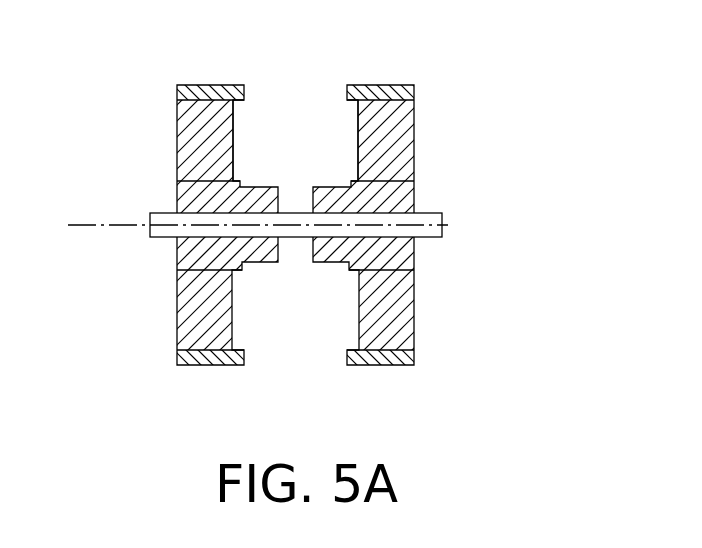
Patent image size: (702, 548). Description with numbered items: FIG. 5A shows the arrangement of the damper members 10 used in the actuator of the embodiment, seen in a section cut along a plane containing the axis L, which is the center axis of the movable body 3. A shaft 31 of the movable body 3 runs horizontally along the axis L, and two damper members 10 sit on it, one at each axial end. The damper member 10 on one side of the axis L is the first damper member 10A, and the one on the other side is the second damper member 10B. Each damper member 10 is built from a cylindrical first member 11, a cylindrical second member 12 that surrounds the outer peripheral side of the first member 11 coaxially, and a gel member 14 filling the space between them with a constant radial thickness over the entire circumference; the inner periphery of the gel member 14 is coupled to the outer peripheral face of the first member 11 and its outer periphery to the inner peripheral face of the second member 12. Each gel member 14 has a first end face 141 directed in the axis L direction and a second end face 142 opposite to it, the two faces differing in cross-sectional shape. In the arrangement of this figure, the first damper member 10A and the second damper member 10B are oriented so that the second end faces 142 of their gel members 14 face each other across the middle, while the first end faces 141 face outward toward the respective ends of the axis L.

The damper member 10 is at (351, 185).
The first damper member 10A is at (213, 70).
The second damper member 10B is at (388, 70).
The first end face 141 is at (177, 128).
The second end face 142 is at (358, 150).
The first member 11 is at (177, 252).
The gel member 14 is at (177, 305).
The second member 12 is at (177, 362).
The shaft 31 is at (352, 232).
The movable body 3 is at (442, 222).
The axis L is at (247, 228).